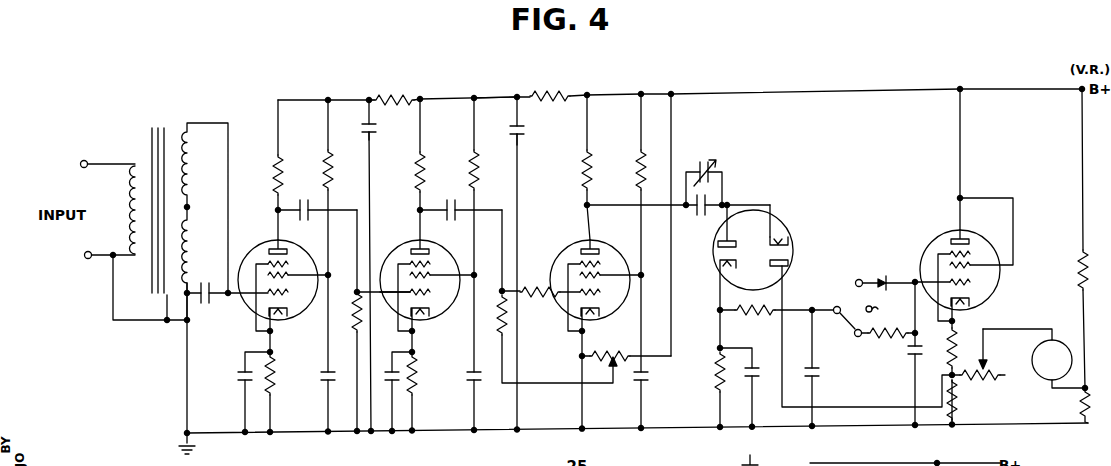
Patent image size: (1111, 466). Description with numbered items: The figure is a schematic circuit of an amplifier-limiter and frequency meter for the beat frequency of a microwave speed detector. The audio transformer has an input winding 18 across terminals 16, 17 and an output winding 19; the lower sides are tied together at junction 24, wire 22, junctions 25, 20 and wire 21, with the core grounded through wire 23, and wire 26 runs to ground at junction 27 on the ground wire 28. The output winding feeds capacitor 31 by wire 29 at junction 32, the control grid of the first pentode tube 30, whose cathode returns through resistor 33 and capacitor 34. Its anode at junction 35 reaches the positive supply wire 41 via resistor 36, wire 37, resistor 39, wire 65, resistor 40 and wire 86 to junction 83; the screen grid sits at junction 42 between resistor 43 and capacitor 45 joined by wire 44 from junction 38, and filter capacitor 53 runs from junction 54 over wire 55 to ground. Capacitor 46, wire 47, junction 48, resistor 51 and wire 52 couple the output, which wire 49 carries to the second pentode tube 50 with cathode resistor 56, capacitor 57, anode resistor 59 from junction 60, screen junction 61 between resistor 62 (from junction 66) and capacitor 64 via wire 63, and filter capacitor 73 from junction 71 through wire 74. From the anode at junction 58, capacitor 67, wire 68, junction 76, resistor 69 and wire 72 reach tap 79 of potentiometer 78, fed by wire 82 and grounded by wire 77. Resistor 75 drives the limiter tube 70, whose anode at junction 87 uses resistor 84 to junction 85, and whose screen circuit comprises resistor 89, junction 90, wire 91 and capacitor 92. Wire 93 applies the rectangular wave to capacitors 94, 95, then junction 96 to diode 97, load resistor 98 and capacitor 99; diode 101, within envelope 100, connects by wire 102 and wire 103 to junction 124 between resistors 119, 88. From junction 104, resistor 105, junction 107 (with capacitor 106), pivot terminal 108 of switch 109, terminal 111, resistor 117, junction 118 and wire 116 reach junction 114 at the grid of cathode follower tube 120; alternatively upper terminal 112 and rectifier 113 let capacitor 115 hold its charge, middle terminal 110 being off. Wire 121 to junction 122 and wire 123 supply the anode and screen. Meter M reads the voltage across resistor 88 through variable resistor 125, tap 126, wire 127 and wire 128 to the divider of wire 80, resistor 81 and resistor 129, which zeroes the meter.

The terminal 16 is at (81, 161).
The terminal 17 is at (95, 266).
The input winding 18 is at (130, 160).
The output winding 19 is at (189, 221).
The junction 20 is at (184, 323).
The wire 21 is at (190, 303).
The wire 22 is at (125, 321).
The wire 23 is at (166, 309).
The junction 24 is at (111, 259).
The junction 25 is at (164, 323).
The wire 26 is at (185, 371).
The junction 27 is at (184, 432).
The ground wire 28 is at (318, 436).
The wire 29 is at (229, 150).
The pentode tube 30 is at (262, 250).
The capacitor 31 is at (207, 281).
The junction 32 is at (246, 305).
The resistor 33 is at (276, 391).
The capacitor 34 is at (241, 381).
The junction 35 is at (275, 210).
The resistor 36 is at (274, 170).
The wire 37 is at (345, 97).
The junction 38 is at (326, 98).
The resistor 39 is at (392, 97).
The resistor 40 is at (548, 96).
The B+ wire 41 is at (775, 92).
The junction 42 is at (330, 274).
The resistor 43 is at (321, 165).
The wire 44 is at (327, 334).
The capacitor 45 is at (327, 379).
The capacitor 46 is at (303, 202).
The wire 47 is at (356, 239).
The junction 48 is at (356, 292).
The wire 49 is at (381, 293).
The pentode tube 50 is at (402, 252).
The resistor 51 is at (356, 333).
The wire 52 is at (363, 387).
The filter capacitor 53 is at (378, 131).
The junction 54 is at (368, 99).
The wire 55 is at (368, 188).
The resistor 56 is at (418, 354).
The capacitor 57 is at (393, 380).
The junction 58 is at (418, 210).
The resistor 59 is at (417, 172).
The junction 60 is at (420, 98).
The junction 61 is at (475, 273).
The resistor 62 is at (470, 172).
The wire 63 is at (474, 312).
The capacitor 64 is at (473, 379).
The wire 65 is at (495, 96).
The junction 66 is at (473, 97).
The capacitor 67 is at (451, 200).
The wire 68 is at (501, 222).
The resistor 69 is at (500, 326).
The limiter tube 70 is at (560, 254).
The junction 71 is at (517, 97).
The wire 72 is at (575, 386).
The filter capacitor 73 is at (525, 132).
The wire 74 is at (520, 198).
The resistor 75 is at (540, 282).
The junction 76 is at (491, 293).
The wire 77 is at (581, 356).
The potentiometer 78 is at (606, 354).
The tap 79 is at (615, 373).
The wire 80 is at (1081, 170).
The resistor 81 is at (1081, 280).
The wire 82 is at (673, 138).
The junction 83 is at (672, 94).
The resistor 84 is at (585, 172).
The junction 85 is at (587, 95).
The wire 86 is at (617, 94).
The junction 87 is at (585, 206).
The resistor 88 is at (960, 400).
The resistor 89 is at (640, 172).
The junction 90 is at (643, 274).
The wire 91 is at (640, 318).
The capacitor 92 is at (650, 375).
The wire 93 is at (632, 205).
The capacitor 94 is at (702, 213).
The adjustable capacitor 95 is at (700, 164).
The junction 96 is at (727, 203).
The diode 97 is at (713, 263).
The load resistor 98 is at (719, 372).
The capacitor 99 is at (750, 373).
The dual diode 100 is at (789, 230).
The diode 101 is at (794, 248).
The wire 102 is at (758, 200).
The wire 103 is at (785, 352).
The junction 104 is at (719, 311).
The resistor 105 is at (758, 313).
The capacitor 106 is at (816, 370).
The junction 107 is at (806, 300).
The pivot terminal 108 is at (835, 307).
The switch 109 is at (854, 327).
The middle terminal 110 is at (886, 311).
The terminal 111 is at (857, 337).
The upper terminal 112 is at (858, 279).
The rectifier 113 is at (881, 279).
The junction 114 is at (913, 281).
The capacitor 115 is at (913, 368).
The wire 116 is at (919, 312).
The resistor 117 is at (880, 342).
The junction 118 is at (913, 335).
The resistor 119 is at (951, 350).
The cathode follower tube 120 is at (935, 237).
The wire 121 is at (961, 152).
The junction 122 is at (957, 87).
The wire 123 is at (1016, 240).
The junction 124 is at (960, 378).
The variable resistor 125 is at (1001, 373).
The tap 126 is at (988, 363).
The wire 127 is at (1006, 328).
The wire 128 is at (1070, 391).
The resistor 129 is at (1083, 416).